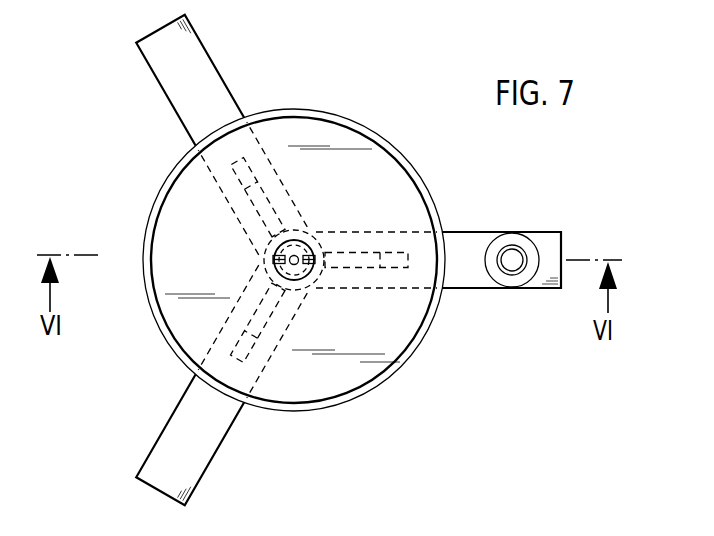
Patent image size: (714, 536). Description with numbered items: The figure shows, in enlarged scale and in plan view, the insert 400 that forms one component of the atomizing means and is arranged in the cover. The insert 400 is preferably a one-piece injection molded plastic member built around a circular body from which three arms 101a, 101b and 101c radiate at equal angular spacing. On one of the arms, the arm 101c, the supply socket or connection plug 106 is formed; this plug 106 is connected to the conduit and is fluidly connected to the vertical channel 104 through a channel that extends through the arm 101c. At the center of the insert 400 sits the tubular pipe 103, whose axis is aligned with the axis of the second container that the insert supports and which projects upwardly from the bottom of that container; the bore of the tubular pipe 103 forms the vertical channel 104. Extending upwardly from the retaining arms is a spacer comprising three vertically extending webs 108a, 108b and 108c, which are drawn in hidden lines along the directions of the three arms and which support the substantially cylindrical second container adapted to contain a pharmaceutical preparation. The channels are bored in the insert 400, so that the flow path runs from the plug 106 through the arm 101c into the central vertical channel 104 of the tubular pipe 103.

The insert 400 is at (398, 130).
The arm 101a is at (228, 80).
The arm 101b is at (188, 454).
The arm 101c is at (553, 242).
The supply socket or connection plug 106 is at (513, 236).
The tubular pipe 103 is at (302, 244).
The vertical channel 104 is at (270, 262).
The web 108a is at (255, 197).
The web 108b is at (250, 327).
The web 108c is at (360, 262).